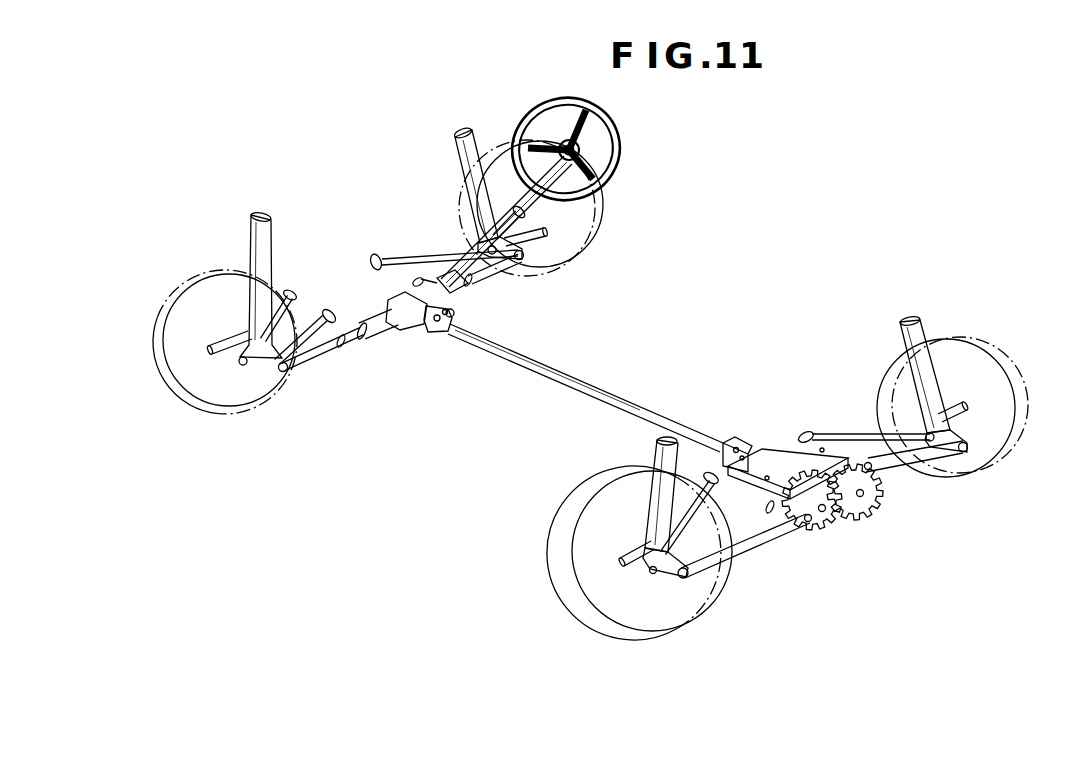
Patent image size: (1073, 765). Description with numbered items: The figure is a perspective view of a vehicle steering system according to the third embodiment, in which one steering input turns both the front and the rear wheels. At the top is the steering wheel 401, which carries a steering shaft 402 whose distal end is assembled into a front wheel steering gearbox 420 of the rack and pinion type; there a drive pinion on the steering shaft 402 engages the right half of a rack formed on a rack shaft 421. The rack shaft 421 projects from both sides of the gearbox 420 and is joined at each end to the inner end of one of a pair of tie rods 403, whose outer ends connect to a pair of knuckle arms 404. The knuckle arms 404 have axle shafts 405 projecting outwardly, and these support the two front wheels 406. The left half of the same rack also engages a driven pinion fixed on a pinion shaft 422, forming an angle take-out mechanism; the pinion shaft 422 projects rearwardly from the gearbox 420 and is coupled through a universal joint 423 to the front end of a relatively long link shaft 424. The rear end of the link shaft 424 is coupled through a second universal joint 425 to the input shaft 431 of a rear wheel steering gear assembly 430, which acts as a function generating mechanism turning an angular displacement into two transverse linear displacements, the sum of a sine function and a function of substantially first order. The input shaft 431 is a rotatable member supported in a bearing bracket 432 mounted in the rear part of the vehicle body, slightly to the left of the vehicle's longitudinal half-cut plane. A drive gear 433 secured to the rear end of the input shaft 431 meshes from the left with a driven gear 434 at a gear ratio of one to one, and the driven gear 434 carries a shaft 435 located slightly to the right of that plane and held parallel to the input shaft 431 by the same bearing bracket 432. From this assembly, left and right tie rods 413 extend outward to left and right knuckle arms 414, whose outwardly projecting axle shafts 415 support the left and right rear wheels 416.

The steering wheel 401 is at (617, 131).
The steering shaft 402 is at (463, 220).
The tie rods 403 is at (320, 353).
The knuckle arms 404 is at (263, 363).
The axle shafts 405 is at (223, 333).
The front wheels 406 is at (200, 390).
The tie rods 413 is at (743, 553).
The knuckle arms 414 is at (667, 583).
The axle shafts 415 is at (627, 548).
The rear wheels 416 is at (590, 608).
The front wheel steering gearbox 420 is at (377, 302).
The rack shaft 421 is at (363, 343).
The pinion shaft 422 is at (427, 330).
The universal joint 423 is at (450, 312).
The link shaft 424 is at (528, 365).
The universal joint 425 is at (730, 443).
The rear wheel steering gear assembly 430 is at (890, 535).
The input shaft 431 is at (820, 512).
The bearing bracket 432 is at (780, 447).
The drive gear 433 is at (812, 533).
The driven gear 434 is at (855, 505).
The shaft 435 is at (867, 497).